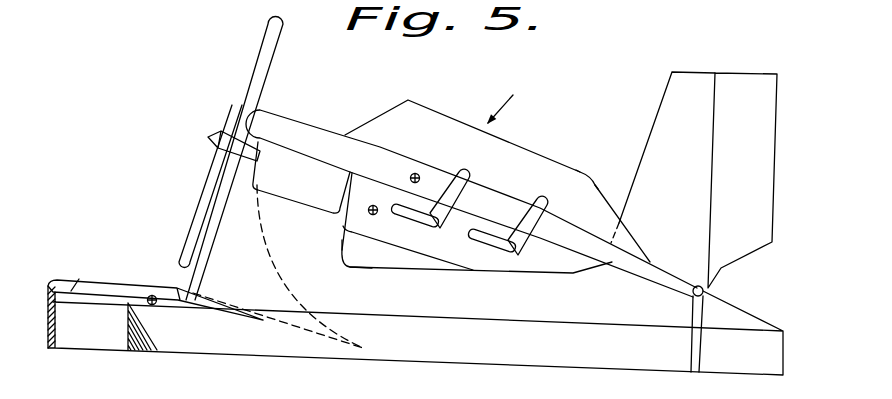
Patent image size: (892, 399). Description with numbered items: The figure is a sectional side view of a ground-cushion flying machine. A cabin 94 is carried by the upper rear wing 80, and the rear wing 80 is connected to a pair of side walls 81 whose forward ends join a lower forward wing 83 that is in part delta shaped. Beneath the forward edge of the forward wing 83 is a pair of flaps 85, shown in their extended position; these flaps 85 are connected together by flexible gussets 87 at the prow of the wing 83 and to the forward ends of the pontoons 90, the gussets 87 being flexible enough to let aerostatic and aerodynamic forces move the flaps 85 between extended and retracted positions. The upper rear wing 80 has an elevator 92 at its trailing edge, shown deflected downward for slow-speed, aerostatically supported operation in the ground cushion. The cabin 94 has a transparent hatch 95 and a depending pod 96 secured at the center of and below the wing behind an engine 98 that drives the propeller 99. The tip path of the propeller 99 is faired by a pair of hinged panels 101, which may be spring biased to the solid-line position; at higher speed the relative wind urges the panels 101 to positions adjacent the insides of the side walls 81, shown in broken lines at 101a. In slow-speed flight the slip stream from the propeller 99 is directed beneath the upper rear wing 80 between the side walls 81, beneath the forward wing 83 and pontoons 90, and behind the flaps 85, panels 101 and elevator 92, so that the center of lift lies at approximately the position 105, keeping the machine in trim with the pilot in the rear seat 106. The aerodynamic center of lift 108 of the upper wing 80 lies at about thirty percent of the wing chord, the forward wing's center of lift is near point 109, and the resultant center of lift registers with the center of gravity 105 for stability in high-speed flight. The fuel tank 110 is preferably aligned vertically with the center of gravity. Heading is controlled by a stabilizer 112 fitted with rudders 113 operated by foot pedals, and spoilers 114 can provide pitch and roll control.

The upper rear wing 80 is at (300, 127).
The side walls 81 is at (447, 308).
The lower forward wing 83 is at (94, 290).
The flaps 85 is at (70, 336).
The gussets 87 is at (143, 349).
The pontoons 90 is at (200, 348).
The elevator 92 is at (700, 336).
The cabin 94 is at (497, 172).
The transparent hatch 95 is at (567, 173).
The depending pod 96 is at (452, 266).
The engine 98 is at (307, 184).
The propeller 99 is at (267, 41).
The panels 101 is at (213, 197).
The panel positions at higher speed 101a is at (272, 246).
The center of lift and center of gravity 105 is at (376, 215).
The rear seat 106 is at (541, 204).
The aerodynamic center of lift of the upper rear wing 108 is at (417, 172).
The center of lift of the forward wing 109 is at (152, 294).
The fuel tank 110 is at (349, 258).
The stabilizer 112 is at (672, 86).
The rudders 113 is at (768, 146).
The spoilers 114 is at (73, 282).